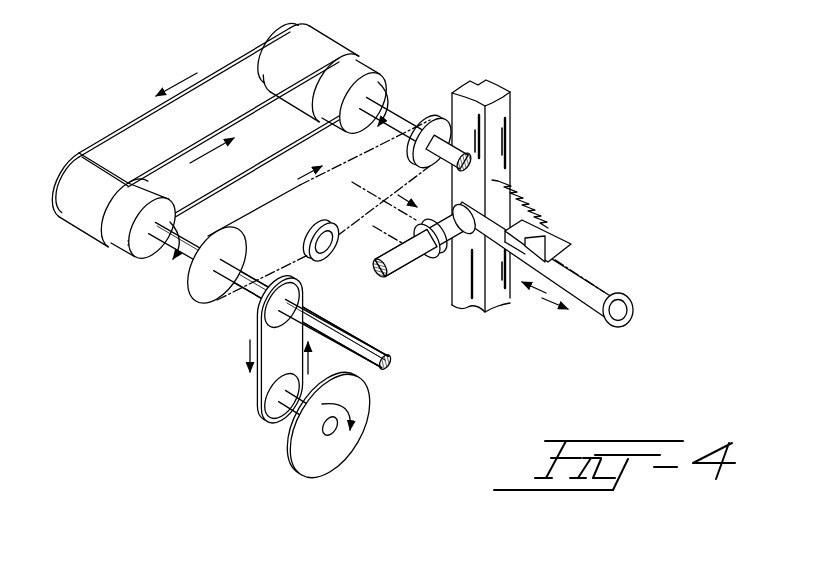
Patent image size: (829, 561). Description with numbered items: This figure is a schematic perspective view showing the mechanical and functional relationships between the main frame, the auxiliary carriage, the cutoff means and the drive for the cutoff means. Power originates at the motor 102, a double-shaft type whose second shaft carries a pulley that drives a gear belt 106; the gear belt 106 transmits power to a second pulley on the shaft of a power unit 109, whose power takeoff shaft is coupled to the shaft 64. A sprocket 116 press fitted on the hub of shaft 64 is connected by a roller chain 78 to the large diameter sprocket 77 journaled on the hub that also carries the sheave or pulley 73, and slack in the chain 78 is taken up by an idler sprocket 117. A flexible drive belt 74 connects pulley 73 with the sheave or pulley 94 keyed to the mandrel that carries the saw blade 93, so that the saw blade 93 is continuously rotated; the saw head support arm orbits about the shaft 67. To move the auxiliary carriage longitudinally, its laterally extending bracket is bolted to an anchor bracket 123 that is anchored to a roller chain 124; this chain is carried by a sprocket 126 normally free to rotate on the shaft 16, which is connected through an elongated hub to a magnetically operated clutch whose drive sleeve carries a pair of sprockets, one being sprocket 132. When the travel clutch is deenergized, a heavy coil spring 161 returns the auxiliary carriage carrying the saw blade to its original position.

The shaft 16 is at (394, 275).
The shaft 64 is at (446, 170).
The shaft 67 is at (339, 329).
The sheave or pulley 73 is at (299, 300).
The drive belt 74 is at (255, 381).
The large diameter sprocket 77 is at (206, 300).
The roller chain 78 is at (337, 166).
The saw blade 93 is at (308, 475).
The sheave or pulley 94 is at (276, 418).
The motor 102 is at (107, 240).
The gear belt 106 is at (238, 64).
The power unit 109 is at (368, 66).
The sprocket 116 is at (430, 127).
The idler sprocket 117 is at (320, 230).
The anchor bracket 123 is at (567, 247).
The roller chain 124 is at (601, 276).
The sprocket 126 is at (418, 227).
The sprocket 132 is at (428, 264).
The coil spring 161 is at (532, 209).